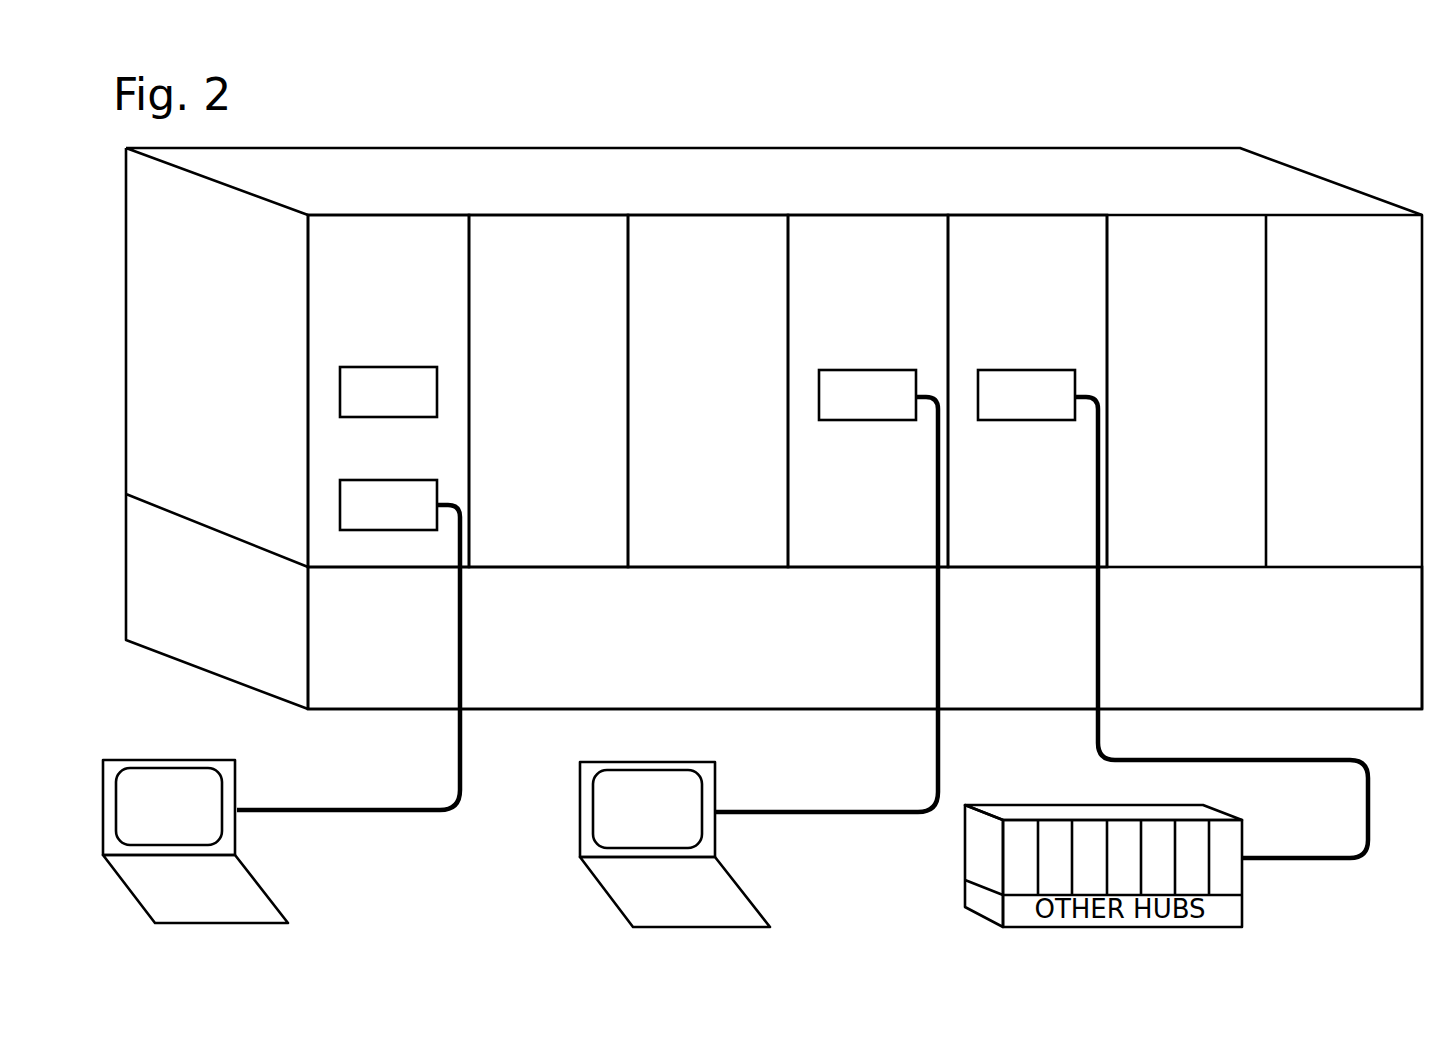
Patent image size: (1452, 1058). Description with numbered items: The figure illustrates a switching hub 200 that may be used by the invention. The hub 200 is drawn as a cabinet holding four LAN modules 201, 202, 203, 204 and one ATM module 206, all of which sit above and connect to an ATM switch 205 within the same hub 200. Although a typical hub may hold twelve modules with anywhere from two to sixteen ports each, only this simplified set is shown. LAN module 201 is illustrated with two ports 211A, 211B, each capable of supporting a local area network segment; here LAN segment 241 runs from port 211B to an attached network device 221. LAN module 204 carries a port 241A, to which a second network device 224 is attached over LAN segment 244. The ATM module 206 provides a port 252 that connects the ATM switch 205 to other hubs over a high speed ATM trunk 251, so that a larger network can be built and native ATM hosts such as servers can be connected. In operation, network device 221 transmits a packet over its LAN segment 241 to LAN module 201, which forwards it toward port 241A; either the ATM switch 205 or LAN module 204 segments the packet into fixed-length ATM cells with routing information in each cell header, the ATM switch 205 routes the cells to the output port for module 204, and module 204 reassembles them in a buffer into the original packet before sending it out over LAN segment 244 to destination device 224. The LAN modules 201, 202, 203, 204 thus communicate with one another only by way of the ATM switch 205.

The hub 200 is at (1347, 135).
The LAN module 201 is at (416, 253).
The LAN module 202 is at (571, 253).
The LAN module 203 is at (735, 253).
The LAN module 204 is at (891, 253).
The ATM switch 205 is at (1363, 610).
The ATM module 206 is at (1050, 253).
The port 211A is at (348, 388).
The port 211B is at (348, 498).
The port 241A is at (820, 390).
The port 252 is at (1075, 380).
The LAN segment 241 is at (463, 713).
The LAN segment 244 is at (933, 720).
The high speed ATM trunk 251 is at (1093, 722).
The network device 221 is at (260, 885).
The network device 224 is at (600, 887).